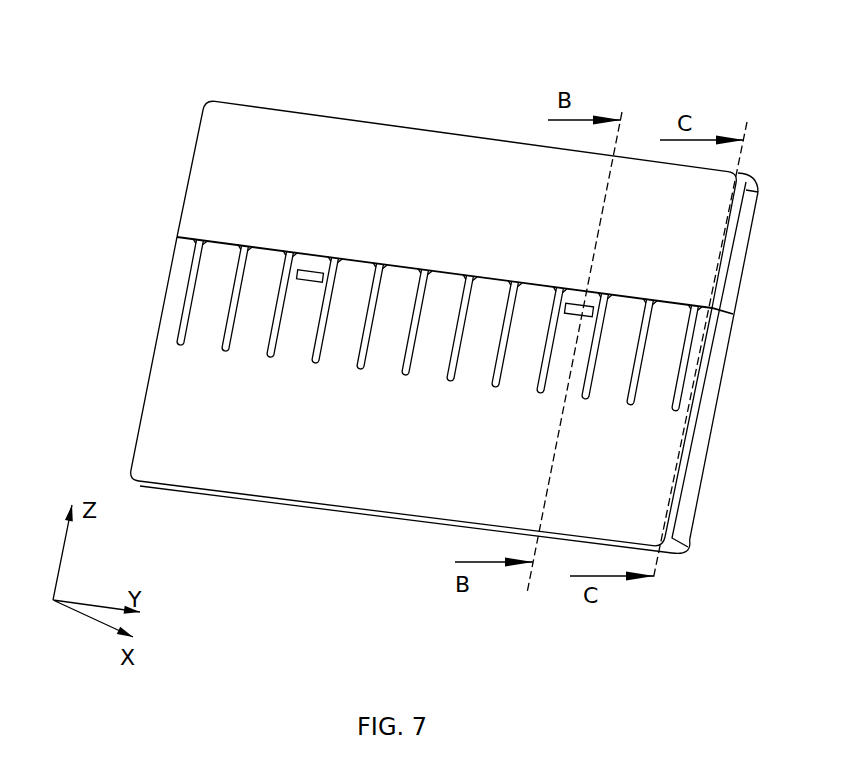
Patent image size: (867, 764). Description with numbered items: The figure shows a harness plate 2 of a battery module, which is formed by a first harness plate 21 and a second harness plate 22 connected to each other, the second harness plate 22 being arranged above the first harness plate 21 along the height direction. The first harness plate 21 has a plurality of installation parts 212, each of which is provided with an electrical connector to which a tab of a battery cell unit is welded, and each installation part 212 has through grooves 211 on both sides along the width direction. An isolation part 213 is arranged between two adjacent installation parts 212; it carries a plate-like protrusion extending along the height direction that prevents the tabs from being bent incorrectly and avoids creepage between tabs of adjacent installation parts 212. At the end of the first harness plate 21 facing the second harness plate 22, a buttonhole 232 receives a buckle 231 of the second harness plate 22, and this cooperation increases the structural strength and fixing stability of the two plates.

The harness plate 2 is at (407, 283).
The first harness plate 21 is at (168, 398).
The second harness plate 22 is at (212, 160).
The through grooves 211 is at (237, 297).
The installation parts 212 is at (288, 345).
The isolation part 213 is at (537, 295).
The buckle 231 is at (310, 266).
The buttonhole 232 is at (583, 293).